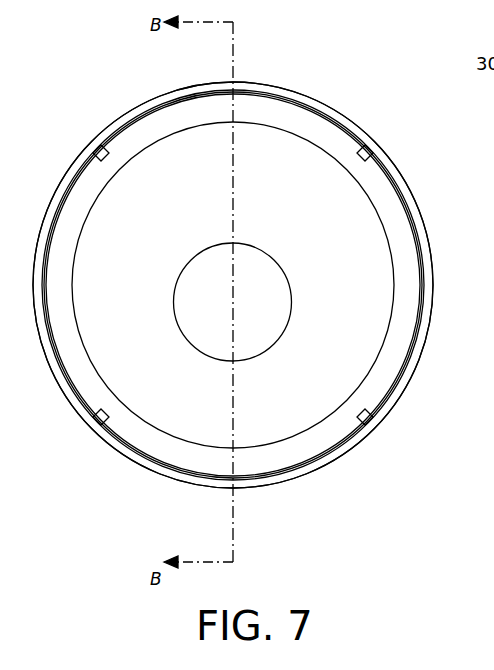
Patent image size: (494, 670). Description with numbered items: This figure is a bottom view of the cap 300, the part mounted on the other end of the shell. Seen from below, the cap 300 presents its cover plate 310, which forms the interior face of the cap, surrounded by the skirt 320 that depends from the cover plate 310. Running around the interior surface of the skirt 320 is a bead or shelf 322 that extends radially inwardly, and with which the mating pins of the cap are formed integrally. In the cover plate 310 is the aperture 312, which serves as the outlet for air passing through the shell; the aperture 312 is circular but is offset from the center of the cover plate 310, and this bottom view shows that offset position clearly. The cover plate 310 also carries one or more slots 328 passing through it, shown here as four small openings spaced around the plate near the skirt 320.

The cap 300 is at (92, 90).
The cover plate 310 is at (176, 224).
The aperture 312 is at (282, 309).
The skirt 320 is at (319, 460).
The bead or shelf 322 is at (306, 100).
The slots 328 is at (97, 151).